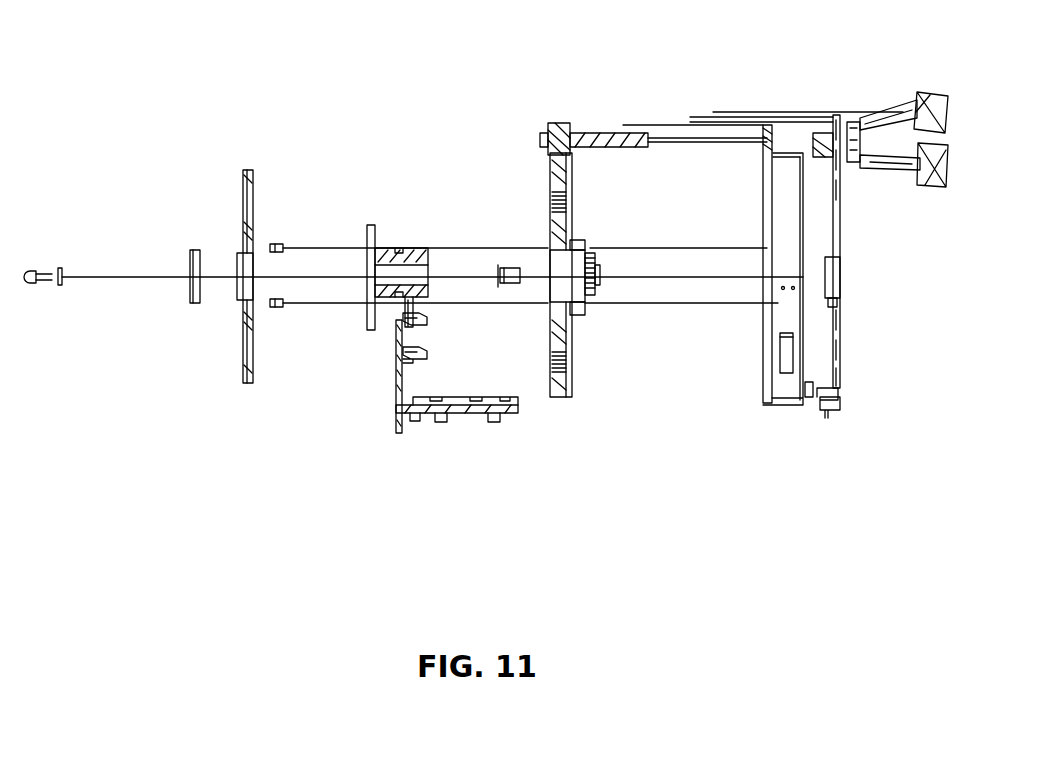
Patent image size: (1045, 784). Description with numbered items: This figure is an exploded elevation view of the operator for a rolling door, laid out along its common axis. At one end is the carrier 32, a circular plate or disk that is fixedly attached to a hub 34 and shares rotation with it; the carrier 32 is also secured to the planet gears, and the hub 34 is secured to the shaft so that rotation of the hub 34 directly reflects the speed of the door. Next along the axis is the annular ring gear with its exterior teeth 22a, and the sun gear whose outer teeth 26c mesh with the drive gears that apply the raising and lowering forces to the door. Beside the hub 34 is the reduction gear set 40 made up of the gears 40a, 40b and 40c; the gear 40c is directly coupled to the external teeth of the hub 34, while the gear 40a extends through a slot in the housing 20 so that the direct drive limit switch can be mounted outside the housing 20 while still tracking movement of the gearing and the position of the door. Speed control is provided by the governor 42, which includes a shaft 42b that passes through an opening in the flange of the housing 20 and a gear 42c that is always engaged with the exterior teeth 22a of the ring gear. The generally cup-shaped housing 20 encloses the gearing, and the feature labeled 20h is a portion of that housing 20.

The carrier 32 is at (235, 187).
The hub 34 is at (368, 207).
The exterior teeth 22a is at (548, 163).
The outer teeth 26c is at (592, 247).
The gear 42c is at (560, 123).
The shaft 42b is at (597, 130).
The governor 42 is at (903, 93).
The housing 20 is at (850, 344).
The housing slot 20h is at (787, 373).
The reduction gear set 40 is at (409, 409).
The gear 40a is at (392, 425).
The gear 40b is at (393, 380).
The gear 40c is at (414, 335).